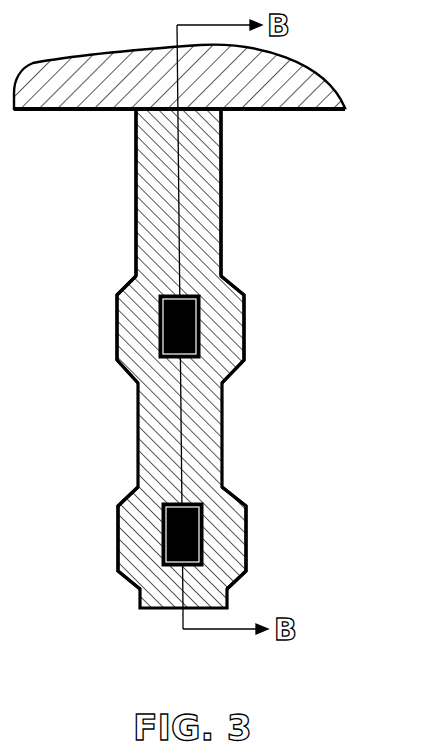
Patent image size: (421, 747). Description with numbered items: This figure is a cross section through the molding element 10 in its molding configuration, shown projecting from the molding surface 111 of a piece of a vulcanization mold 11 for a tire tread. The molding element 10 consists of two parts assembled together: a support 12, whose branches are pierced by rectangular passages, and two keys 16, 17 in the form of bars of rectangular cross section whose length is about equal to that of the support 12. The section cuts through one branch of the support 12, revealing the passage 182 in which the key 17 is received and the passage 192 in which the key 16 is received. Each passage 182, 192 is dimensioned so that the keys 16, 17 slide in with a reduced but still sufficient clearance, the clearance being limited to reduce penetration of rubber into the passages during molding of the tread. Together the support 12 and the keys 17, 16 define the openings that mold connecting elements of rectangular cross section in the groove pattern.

The molding element 10 is at (257, 275).
The vulcanization mold 11 is at (284, 81).
The molding surface 111 is at (257, 111).
The support 12 is at (175, 223).
The key 17 is at (176, 341).
The passage 182 is at (205, 345).
The key 16 is at (165, 546).
The passage 192 is at (208, 540).